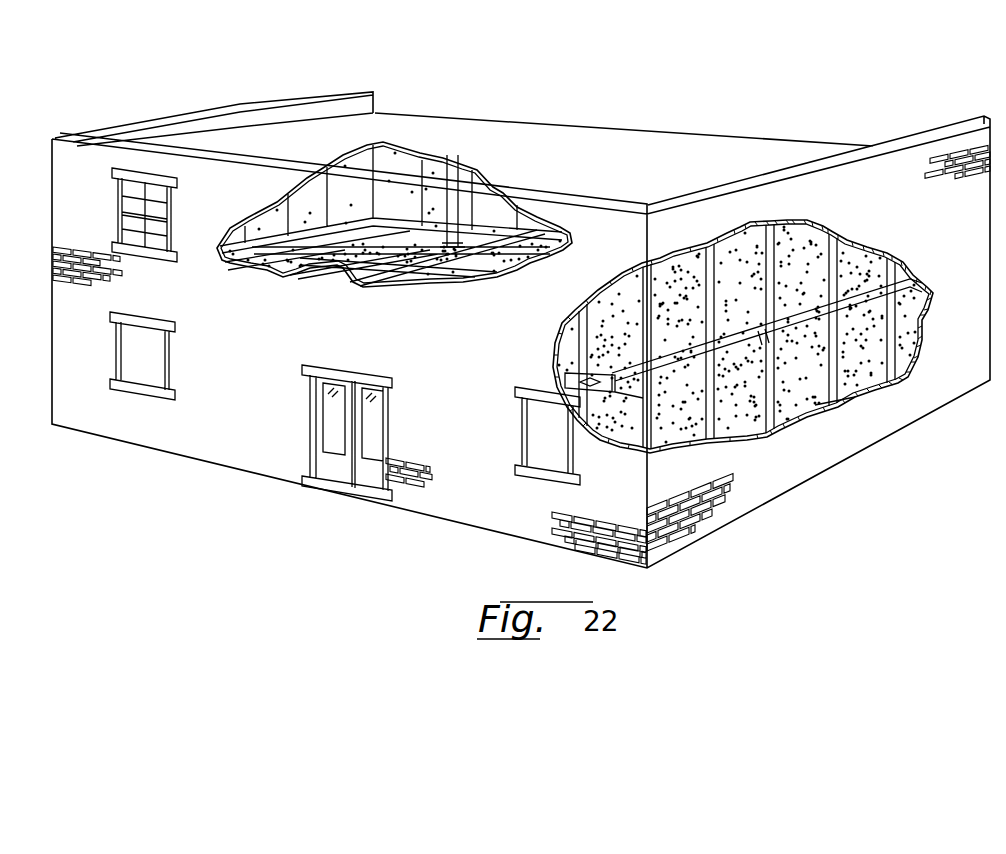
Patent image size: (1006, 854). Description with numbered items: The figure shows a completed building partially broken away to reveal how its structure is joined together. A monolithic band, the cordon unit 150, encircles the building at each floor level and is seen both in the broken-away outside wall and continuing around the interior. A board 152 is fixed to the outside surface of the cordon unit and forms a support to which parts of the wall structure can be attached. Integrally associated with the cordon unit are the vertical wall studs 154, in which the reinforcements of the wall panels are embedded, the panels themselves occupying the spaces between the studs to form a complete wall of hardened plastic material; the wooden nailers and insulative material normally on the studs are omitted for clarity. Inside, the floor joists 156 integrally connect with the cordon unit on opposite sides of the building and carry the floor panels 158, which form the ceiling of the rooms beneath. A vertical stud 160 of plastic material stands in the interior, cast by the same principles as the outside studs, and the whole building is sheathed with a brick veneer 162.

The cordon unit 150 is at (243, 222).
The board 152 is at (926, 316).
The vertical wall studs 154 is at (837, 247).
The floor joists 156 is at (353, 283).
The floor panels 158 is at (273, 260).
The vertical stud 160 is at (457, 181).
The brick veneer 162 is at (834, 413).